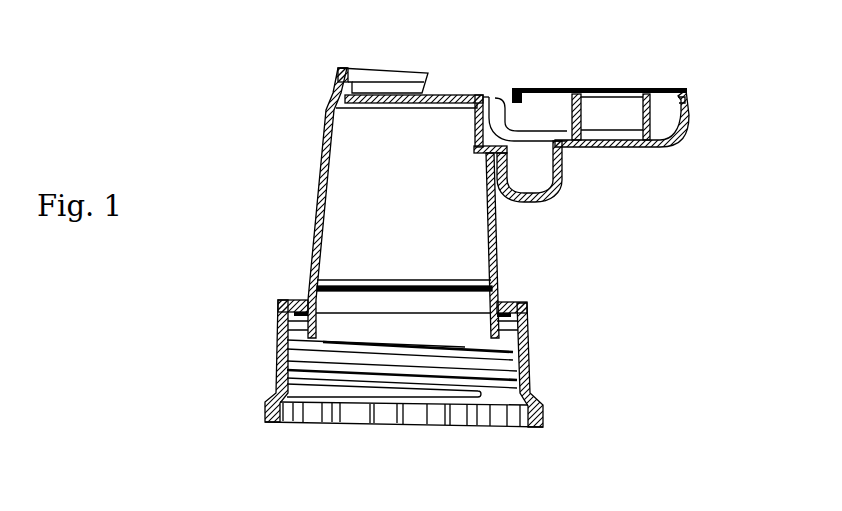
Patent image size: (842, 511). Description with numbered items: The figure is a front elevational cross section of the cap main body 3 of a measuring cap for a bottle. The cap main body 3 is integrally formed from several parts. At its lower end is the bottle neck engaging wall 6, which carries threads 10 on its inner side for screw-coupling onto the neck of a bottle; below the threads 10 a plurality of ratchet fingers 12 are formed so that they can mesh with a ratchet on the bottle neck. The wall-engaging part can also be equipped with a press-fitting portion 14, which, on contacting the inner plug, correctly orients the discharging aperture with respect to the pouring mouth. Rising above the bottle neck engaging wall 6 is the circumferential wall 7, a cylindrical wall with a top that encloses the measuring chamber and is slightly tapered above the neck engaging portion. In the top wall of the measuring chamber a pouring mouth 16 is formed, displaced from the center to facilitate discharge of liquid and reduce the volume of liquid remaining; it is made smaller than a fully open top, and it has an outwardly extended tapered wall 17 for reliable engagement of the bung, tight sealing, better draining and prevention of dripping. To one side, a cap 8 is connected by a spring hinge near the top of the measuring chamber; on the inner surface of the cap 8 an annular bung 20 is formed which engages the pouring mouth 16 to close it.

The cap main body 3 is at (306, 222).
The bottle neck engaging wall 6 is at (528, 348).
The circumferential wall 7 is at (497, 242).
The cap 8 is at (670, 141).
The threads 10 is at (520, 377).
The ratchet fingers 12 is at (285, 421).
The press-fitting portion 14 is at (309, 286).
The pouring mouth 16 is at (407, 77).
The tapered wall 17 is at (347, 67).
The annular bung 20 is at (657, 98).